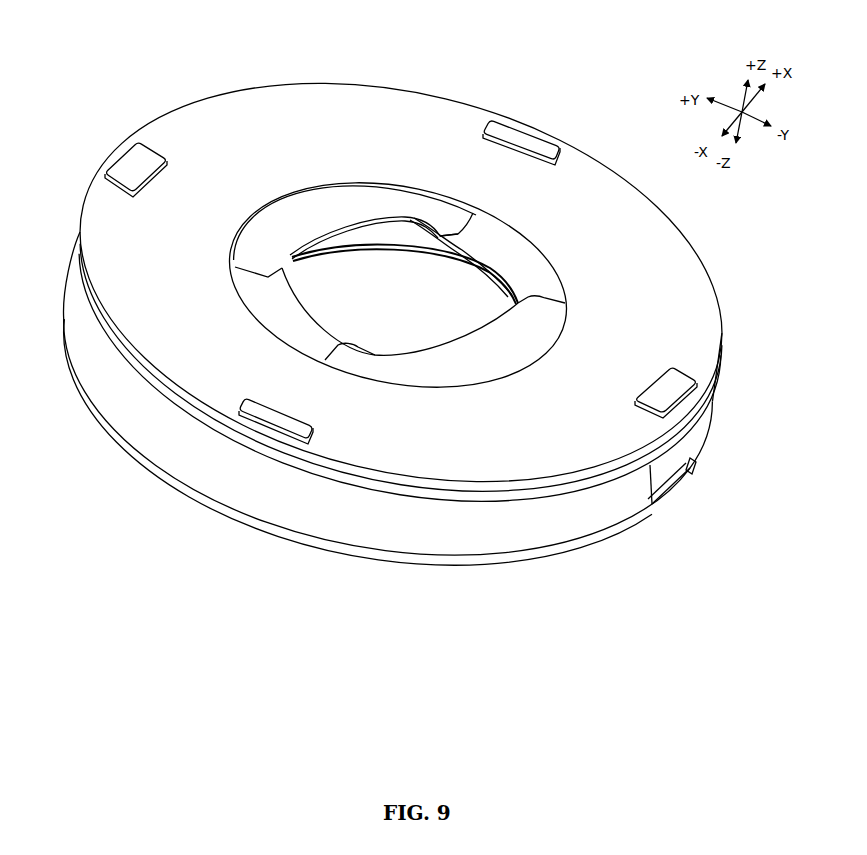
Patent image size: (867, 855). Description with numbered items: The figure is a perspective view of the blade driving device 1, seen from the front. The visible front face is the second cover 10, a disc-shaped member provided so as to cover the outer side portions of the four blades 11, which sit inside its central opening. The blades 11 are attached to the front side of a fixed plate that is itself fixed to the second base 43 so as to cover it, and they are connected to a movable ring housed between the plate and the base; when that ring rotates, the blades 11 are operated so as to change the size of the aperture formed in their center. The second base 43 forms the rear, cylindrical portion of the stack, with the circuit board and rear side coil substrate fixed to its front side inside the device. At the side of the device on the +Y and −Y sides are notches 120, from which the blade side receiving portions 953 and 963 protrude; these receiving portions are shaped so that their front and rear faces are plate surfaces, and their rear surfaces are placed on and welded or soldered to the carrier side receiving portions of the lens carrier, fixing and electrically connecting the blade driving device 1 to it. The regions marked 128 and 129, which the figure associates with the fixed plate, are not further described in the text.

The blade driving device 1 is at (397, 340).
The second cover 10 is at (237, 133).
The blades 11 is at (280, 240).
The second base 43 is at (207, 497).
The notches 120 is at (685, 483).
The slit of housing 128 is at (400, 234).
The rim portion of housing 129 is at (132, 403).
The blade side receiving portion 953 is at (686, 472).
The blade side receiving portion 963 is at (652, 502).